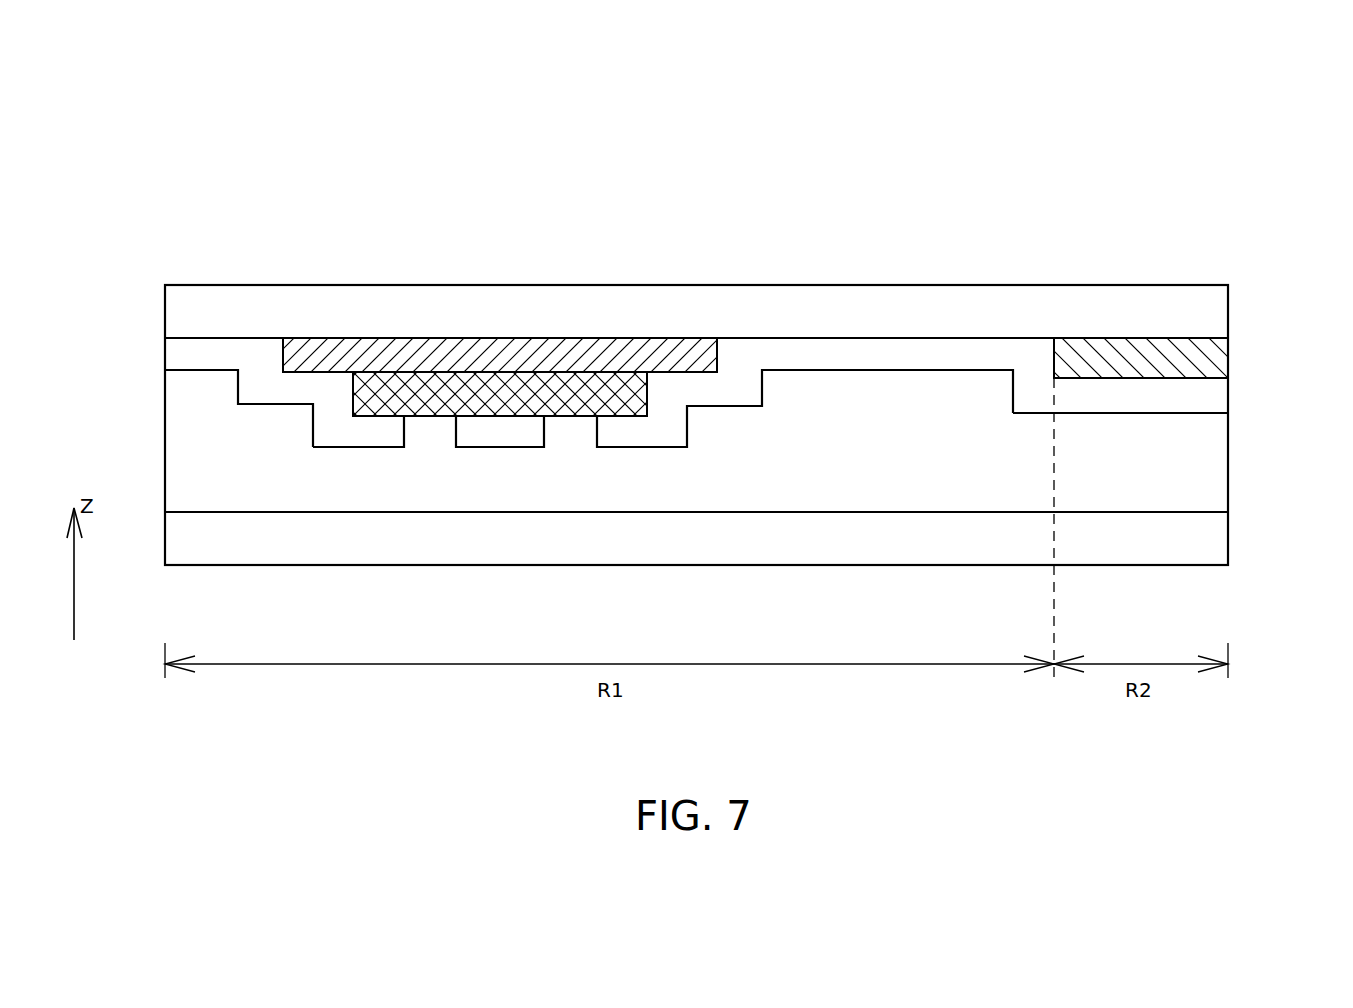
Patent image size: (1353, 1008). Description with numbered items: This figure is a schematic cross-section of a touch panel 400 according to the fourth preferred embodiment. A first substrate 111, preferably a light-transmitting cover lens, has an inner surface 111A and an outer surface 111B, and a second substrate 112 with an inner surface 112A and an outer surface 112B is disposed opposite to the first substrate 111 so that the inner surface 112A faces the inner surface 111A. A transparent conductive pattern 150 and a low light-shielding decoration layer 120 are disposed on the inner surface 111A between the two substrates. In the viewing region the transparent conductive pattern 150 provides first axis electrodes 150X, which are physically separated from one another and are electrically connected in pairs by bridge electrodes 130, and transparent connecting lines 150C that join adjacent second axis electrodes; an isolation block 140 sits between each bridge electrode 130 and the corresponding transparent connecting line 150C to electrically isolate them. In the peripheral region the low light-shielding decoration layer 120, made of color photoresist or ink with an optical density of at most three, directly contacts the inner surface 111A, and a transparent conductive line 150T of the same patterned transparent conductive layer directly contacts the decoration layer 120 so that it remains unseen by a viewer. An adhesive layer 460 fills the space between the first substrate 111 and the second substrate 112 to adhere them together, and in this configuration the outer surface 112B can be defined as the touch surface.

The touch panel 400 is at (1072, 152).
The first substrate 111 is at (1218, 310).
The inner surface 111A is at (1218, 348).
The outer surface 111B is at (1203, 285).
The second substrate 112 is at (1218, 539).
The inner surface 112A is at (1213, 511).
The outer surface 112B is at (1213, 566).
The low light-shielding decoration layer 120 is at (1213, 360).
The bridge electrode 130 is at (443, 357).
The isolation block 140 is at (548, 380).
The transparent conductive pattern 150 is at (609, 524).
The first axis electrode 150X is at (347, 435).
The transparent connecting line 150C is at (497, 435).
The transparent conductive line 150T is at (1122, 400).
The adhesive layer 460 is at (1218, 460).